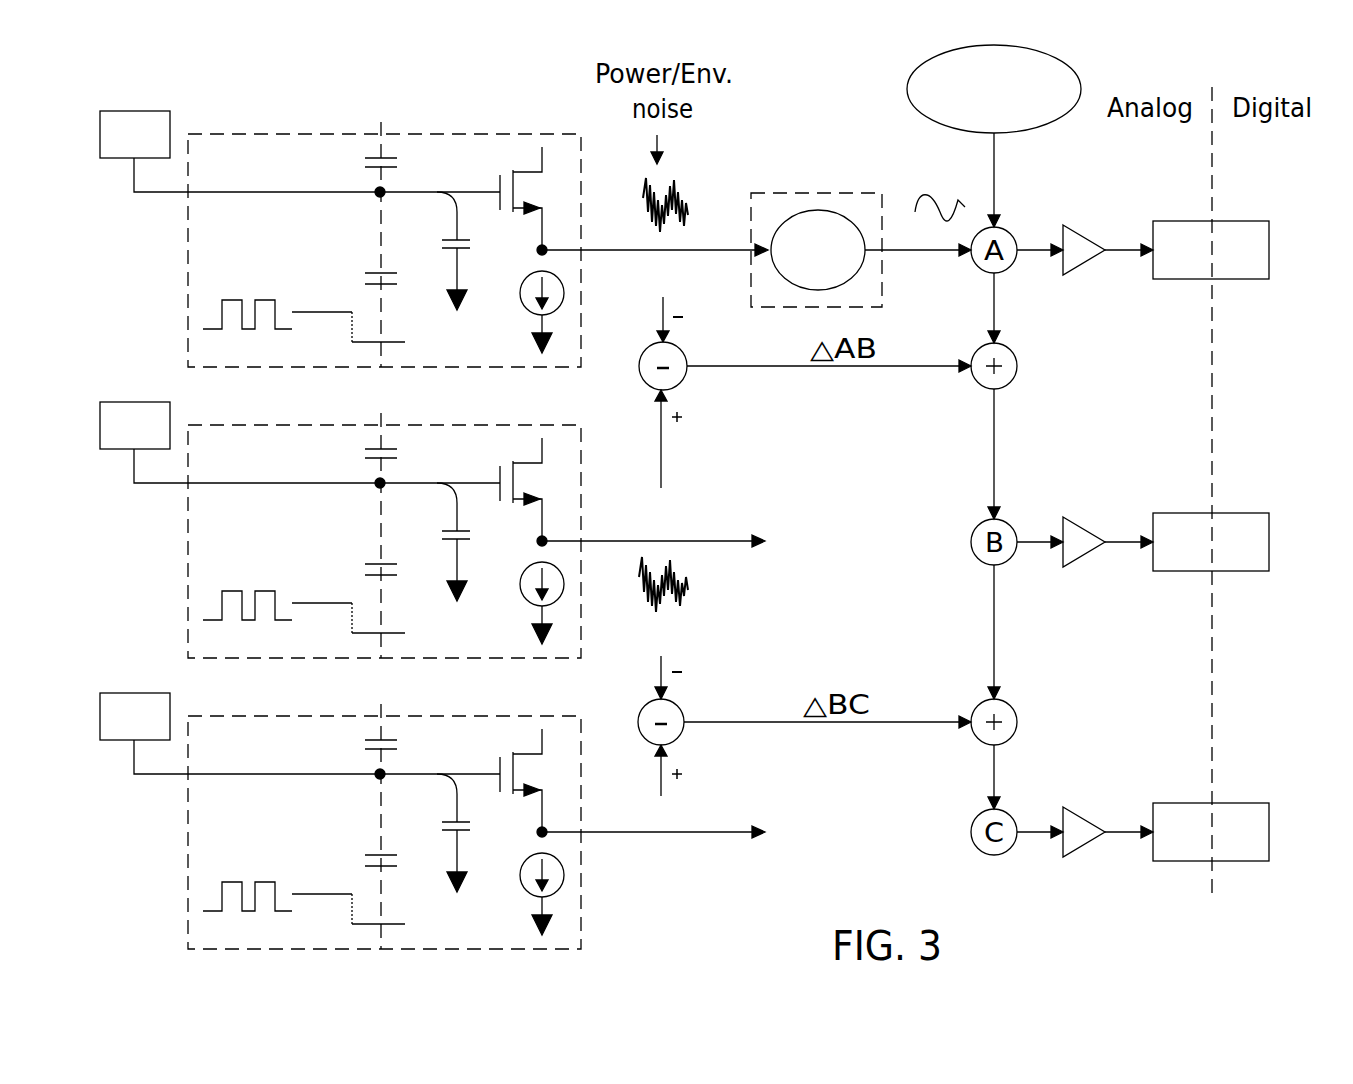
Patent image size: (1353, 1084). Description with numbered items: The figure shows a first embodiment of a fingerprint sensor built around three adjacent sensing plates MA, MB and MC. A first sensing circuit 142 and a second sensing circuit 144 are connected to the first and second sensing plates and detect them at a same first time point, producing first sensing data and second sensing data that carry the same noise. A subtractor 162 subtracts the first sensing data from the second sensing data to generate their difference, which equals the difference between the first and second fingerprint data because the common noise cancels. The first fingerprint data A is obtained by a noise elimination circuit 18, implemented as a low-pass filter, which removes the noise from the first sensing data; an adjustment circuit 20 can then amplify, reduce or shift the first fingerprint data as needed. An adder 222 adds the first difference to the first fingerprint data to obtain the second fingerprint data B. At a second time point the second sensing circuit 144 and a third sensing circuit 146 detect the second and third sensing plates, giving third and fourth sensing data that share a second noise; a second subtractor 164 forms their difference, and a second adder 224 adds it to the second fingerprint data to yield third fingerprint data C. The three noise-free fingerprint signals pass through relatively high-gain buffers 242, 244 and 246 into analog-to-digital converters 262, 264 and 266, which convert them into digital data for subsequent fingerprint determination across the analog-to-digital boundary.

The first sensing circuit 142 is at (188, 252).
The second sensing circuit 144 is at (188, 543).
The third sensing circuit 146 is at (188, 834).
The noise elimination circuit 18 is at (813, 193).
The adjustment circuit 20 is at (1080, 77).
The subtractor 162 is at (683, 381).
The second subtractor 164 is at (681, 737).
The adder 222 is at (1017, 358).
The second adder 224 is at (1017, 714).
The buffer 242 is at (1103, 215).
The buffer 244 is at (1085, 522).
The buffer 246 is at (1085, 812).
The analog-to-digital converter 262 is at (1240, 221).
The analog-to-digital converter 264 is at (1240, 513).
The analog-to-digital converter 266 is at (1240, 803).